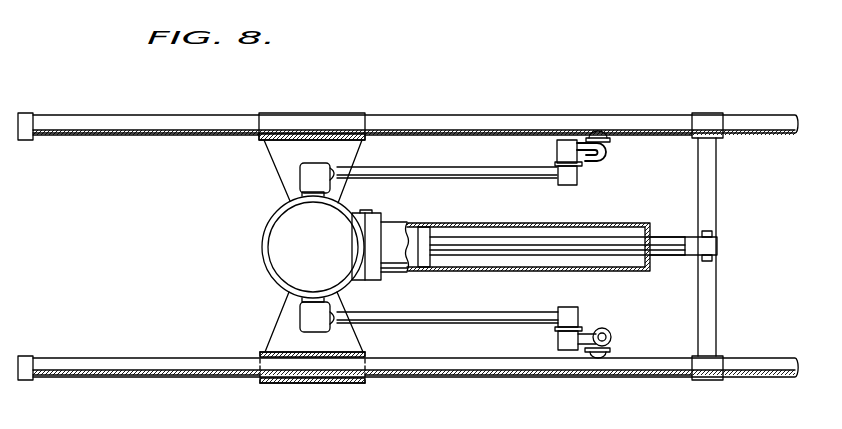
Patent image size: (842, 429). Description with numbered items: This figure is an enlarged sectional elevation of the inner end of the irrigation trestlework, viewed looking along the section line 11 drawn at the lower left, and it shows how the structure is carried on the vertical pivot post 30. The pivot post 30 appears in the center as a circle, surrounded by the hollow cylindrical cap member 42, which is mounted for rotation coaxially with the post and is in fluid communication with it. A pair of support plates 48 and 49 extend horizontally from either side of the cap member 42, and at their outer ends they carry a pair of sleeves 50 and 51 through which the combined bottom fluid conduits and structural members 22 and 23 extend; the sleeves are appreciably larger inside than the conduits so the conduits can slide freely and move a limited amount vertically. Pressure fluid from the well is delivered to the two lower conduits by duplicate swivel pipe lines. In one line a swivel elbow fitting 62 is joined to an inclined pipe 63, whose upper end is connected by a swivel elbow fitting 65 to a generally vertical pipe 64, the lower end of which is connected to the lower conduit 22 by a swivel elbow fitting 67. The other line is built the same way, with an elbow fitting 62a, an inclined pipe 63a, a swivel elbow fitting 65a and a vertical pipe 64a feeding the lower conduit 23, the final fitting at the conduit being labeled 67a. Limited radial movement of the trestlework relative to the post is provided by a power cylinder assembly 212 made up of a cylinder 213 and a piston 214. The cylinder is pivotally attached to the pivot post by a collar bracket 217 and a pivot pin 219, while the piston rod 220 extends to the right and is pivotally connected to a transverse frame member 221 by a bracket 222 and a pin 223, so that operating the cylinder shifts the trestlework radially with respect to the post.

The section line 11 is at (153, 403).
The combined bottom fluid conduit and structural member 22 is at (506, 378).
The combined bottom fluid conduit and structural member 23 is at (517, 118).
The vertical pivot post 30 is at (262, 273).
The hollow cylindrical cap member 42 is at (276, 229).
The support plate 48 is at (283, 314).
The support plate 49 is at (273, 169).
The sleeve 50 is at (335, 384).
The sleeve 51 is at (287, 118).
The swivel elbow fitting 62 is at (301, 322).
The elbow fitting 62a is at (320, 165).
The inclined pipe 63 is at (505, 315).
The inclined pipe 63a is at (418, 172).
The vertical pipe 64 is at (607, 334).
The vertical pipe 64a is at (590, 162).
The swivel elbow fitting 65 is at (578, 310).
The swivel elbow fitting 65a is at (566, 142).
The swivel elbow fitting 67 is at (612, 349).
The upper clip 67a is at (609, 151).
The power cylinder assembly 212 is at (445, 226).
The cylinder 213 is at (545, 225).
The piston 214 is at (425, 268).
The collar bracket 217 is at (357, 215).
The pivot pin 219 is at (361, 281).
The piston rod 220 is at (623, 240).
The transverse frame member 221 is at (717, 301).
The bracket 222 is at (718, 248).
The pin 223 is at (714, 229).